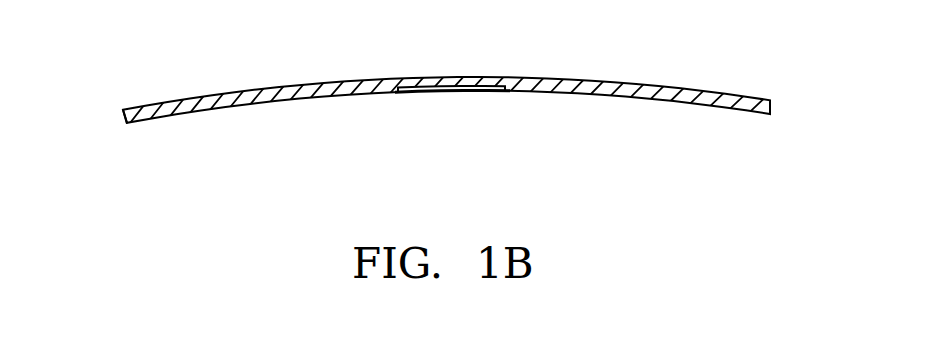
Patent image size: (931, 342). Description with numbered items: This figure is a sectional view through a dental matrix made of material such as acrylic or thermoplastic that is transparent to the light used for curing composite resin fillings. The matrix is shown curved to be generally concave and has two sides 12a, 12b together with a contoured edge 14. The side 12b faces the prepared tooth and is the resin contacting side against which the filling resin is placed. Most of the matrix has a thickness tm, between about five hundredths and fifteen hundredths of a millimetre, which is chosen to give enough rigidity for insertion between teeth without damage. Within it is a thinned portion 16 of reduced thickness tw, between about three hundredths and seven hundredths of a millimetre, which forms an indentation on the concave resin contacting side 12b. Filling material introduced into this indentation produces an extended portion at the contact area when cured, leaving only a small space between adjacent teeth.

The side 12a is at (732, 94).
The resin contacting side 12b is at (740, 110).
The contoured edge 14 is at (122, 110).
The thinned portion 16 is at (488, 92).
The matrix thickness tm is at (270, 143).
The thinned portion thickness tw is at (425, 127).